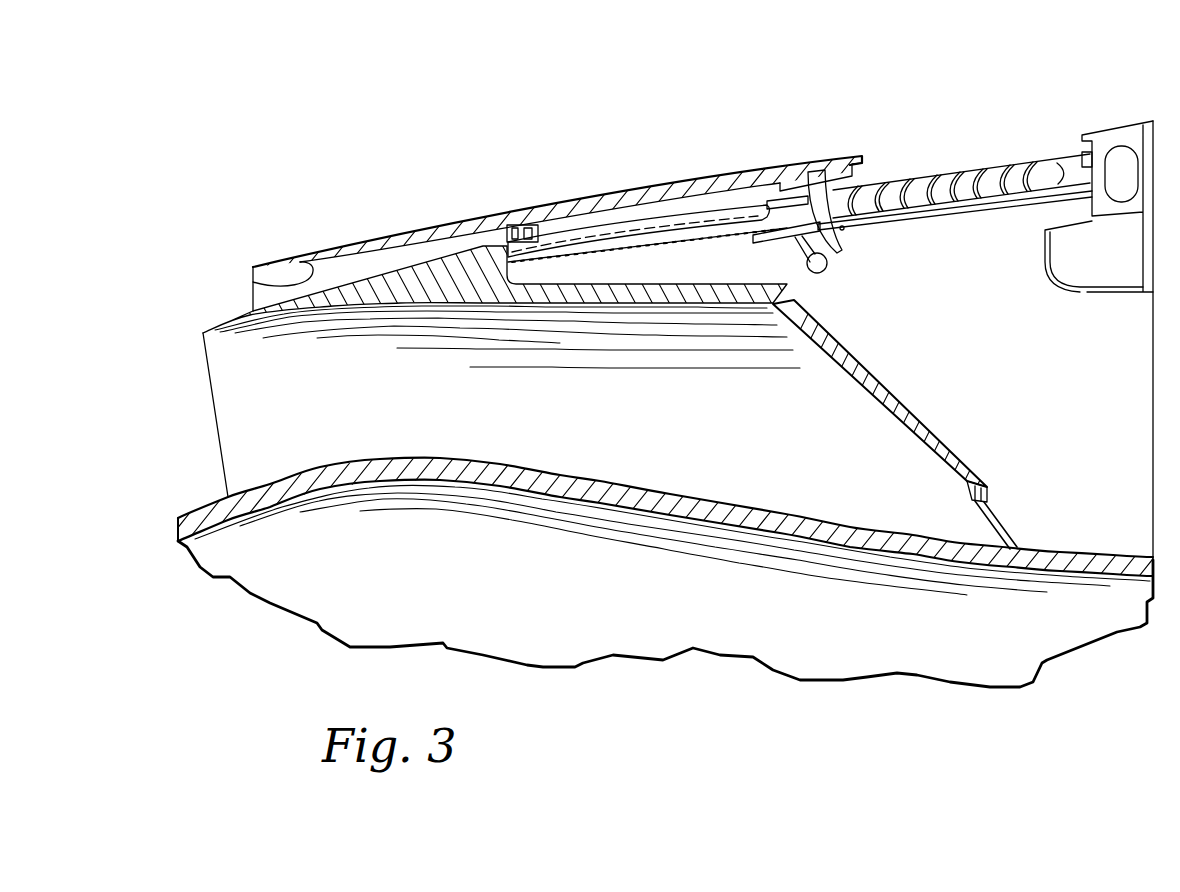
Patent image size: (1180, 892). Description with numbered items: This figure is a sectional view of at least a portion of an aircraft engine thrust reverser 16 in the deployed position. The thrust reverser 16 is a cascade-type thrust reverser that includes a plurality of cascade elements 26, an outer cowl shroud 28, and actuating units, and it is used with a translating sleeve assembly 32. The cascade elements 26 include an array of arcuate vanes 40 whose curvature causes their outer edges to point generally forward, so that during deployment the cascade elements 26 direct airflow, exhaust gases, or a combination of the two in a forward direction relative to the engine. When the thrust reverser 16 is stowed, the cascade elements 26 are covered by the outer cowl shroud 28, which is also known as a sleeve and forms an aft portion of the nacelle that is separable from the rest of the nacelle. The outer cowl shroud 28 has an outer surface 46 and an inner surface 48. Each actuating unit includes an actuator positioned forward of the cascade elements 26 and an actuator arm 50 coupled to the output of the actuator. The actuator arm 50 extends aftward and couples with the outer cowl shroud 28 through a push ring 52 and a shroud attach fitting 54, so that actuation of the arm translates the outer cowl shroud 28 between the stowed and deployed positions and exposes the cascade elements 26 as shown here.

The thrust reverser 16 is at (933, 93).
The cascade elements 26 is at (1045, 133).
The outer cowl shroud 28 is at (345, 237).
The translating sleeve assembly 32 is at (672, 248).
The arcuate vanes 40 is at (988, 167).
The outer surface 46 is at (660, 183).
The inner surface 48 is at (253, 283).
The actuator arm 50 is at (968, 207).
The push ring 52 is at (852, 185).
The shroud attach fitting 54 is at (862, 165).